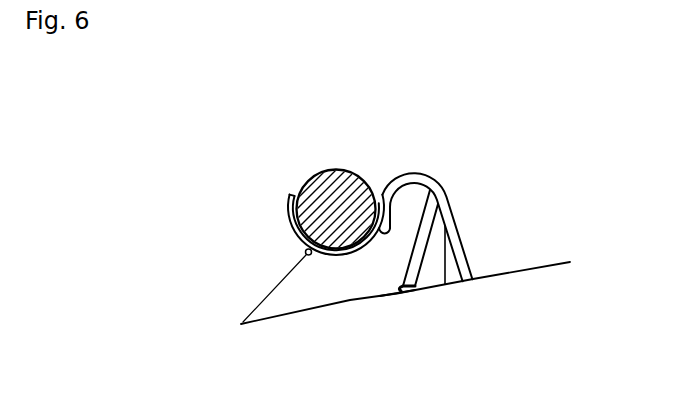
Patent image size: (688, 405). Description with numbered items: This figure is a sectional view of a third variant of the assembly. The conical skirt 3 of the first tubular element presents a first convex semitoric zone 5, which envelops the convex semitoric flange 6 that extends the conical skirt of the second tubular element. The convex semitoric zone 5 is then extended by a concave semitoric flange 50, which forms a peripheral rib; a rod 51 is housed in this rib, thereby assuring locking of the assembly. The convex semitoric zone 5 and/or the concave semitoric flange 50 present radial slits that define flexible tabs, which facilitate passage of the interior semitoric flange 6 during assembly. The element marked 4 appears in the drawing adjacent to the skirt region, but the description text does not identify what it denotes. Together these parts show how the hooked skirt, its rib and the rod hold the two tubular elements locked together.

The conical skirt 3 is at (472, 263).
The fold 4 is at (397, 293).
The first convex semitoric zone 5 is at (440, 185).
The convex semitoric flange 6 is at (405, 186).
The concave semitoric flange 50 is at (294, 226).
The rod 51 is at (316, 177).